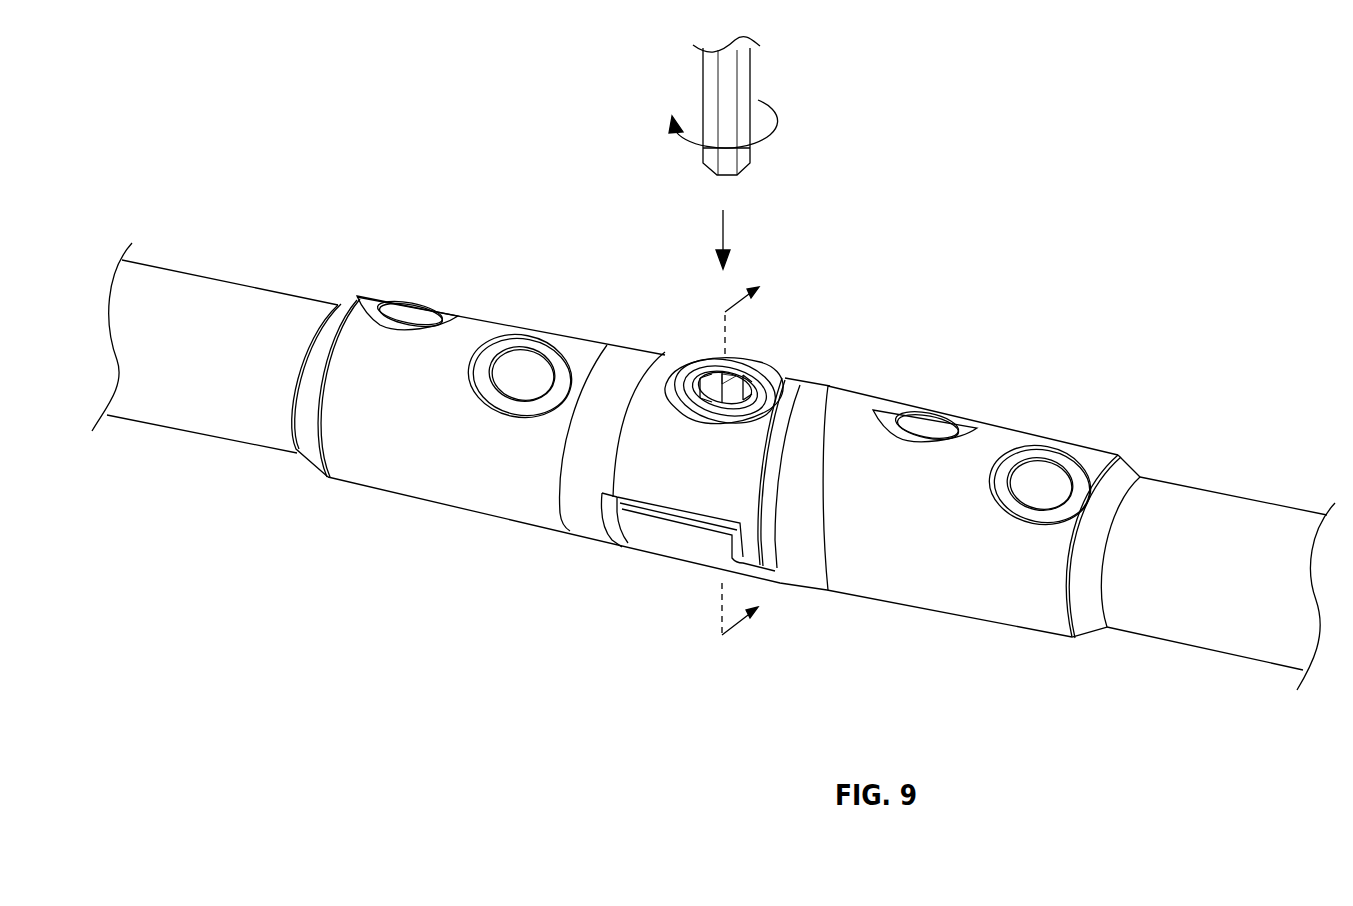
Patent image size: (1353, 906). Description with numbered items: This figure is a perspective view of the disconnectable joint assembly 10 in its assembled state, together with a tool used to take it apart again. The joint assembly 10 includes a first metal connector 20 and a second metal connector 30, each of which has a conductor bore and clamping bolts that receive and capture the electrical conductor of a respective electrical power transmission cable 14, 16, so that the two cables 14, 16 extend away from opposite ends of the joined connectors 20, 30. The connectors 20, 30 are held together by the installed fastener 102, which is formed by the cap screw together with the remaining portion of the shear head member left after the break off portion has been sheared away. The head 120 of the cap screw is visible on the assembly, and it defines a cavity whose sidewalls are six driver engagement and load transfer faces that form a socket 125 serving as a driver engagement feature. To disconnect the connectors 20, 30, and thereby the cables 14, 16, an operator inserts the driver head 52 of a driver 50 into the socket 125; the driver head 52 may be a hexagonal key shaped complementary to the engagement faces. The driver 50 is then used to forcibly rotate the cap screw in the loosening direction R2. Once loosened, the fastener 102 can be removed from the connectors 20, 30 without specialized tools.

The electrical power transmission cable 14 is at (203, 295).
The electrical power transmission cable 16 is at (1186, 498).
The second metal connector 30 is at (440, 514).
The first metal connector 20 is at (925, 615).
The installed fastener 102 is at (794, 327).
The head 120 is at (758, 378).
The socket 125 is at (710, 376).
The driver 50 is at (770, 147).
The driver head 52 is at (750, 153).
The joint assembly 10 is at (760, 451).
The loosening direction R2 is at (718, 113).